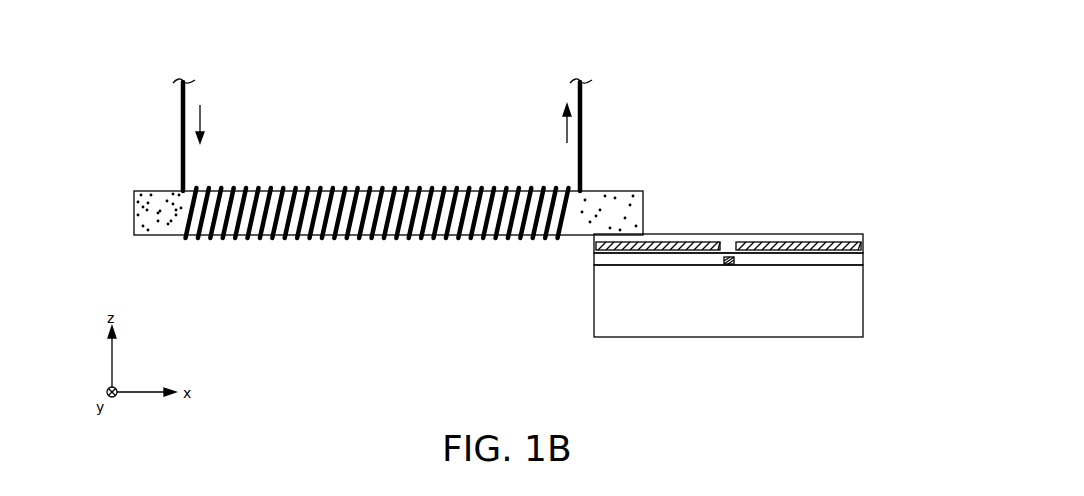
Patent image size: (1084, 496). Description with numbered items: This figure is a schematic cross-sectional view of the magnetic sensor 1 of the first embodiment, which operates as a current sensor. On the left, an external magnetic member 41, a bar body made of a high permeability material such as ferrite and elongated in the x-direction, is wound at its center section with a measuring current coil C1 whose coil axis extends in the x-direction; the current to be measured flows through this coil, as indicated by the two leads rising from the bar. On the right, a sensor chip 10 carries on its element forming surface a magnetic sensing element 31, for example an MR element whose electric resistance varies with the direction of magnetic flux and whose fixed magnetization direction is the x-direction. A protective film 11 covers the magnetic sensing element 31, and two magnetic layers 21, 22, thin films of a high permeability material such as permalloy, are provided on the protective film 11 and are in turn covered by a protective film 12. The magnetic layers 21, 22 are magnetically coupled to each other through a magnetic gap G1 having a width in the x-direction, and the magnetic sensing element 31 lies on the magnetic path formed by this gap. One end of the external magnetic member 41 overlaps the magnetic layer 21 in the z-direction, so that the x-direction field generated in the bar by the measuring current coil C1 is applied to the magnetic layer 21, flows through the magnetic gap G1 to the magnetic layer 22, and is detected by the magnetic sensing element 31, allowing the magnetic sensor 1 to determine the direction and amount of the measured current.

The magnetic sensor 1 is at (830, 67).
The external magnetic member 41 is at (153, 197).
The measuring current coil C1 is at (414, 239).
The protective film 12 is at (843, 238).
The magnetic layer 21 is at (671, 242).
The magnetic layer 22 is at (803, 242).
The magnetic gap G1 is at (731, 226).
The protective film 11 is at (853, 260).
The magnetic sensing element 31 is at (729, 266).
The sensor chip 10 is at (853, 302).